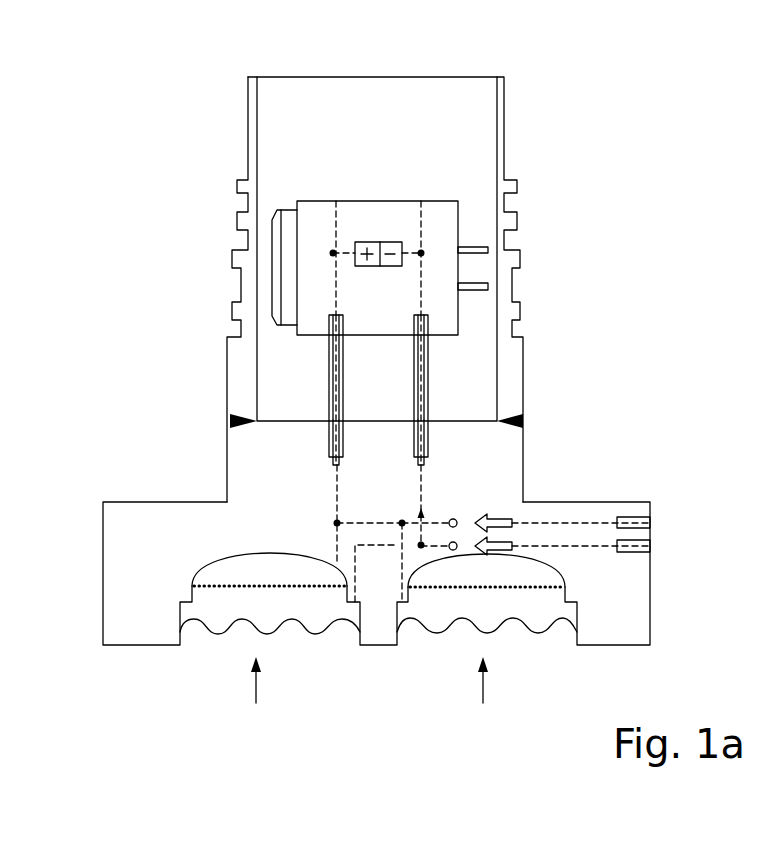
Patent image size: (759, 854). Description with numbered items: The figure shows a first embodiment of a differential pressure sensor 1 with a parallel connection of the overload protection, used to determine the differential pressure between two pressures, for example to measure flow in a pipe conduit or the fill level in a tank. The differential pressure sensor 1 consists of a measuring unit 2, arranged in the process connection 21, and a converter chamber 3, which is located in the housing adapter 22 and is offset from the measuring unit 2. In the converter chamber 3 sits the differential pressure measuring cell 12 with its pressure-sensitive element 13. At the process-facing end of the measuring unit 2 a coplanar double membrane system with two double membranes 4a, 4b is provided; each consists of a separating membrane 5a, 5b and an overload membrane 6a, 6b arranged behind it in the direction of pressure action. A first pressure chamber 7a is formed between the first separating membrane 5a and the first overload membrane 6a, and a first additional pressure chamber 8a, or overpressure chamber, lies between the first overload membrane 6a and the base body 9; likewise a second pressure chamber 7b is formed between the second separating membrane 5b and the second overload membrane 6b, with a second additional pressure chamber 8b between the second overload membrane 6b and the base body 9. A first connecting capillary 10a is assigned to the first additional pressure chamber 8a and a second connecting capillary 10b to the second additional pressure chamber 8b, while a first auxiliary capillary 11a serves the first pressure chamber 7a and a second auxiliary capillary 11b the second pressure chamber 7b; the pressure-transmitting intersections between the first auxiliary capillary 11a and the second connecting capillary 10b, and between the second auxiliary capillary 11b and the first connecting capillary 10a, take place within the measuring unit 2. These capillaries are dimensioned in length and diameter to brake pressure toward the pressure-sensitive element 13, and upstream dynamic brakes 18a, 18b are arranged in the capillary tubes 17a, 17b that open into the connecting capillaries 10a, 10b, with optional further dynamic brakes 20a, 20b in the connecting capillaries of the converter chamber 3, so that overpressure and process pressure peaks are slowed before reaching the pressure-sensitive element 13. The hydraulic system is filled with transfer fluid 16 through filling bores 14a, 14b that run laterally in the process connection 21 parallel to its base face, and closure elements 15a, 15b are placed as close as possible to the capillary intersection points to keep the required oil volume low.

The differential pressure sensor 1 is at (573, 430).
The measuring unit 2 is at (411, 539).
The converter chamber 3 is at (336, 223).
The first double membrane 4a is at (204, 658).
The second double membrane 4b is at (556, 658).
The first separating membrane 5a is at (327, 634).
The second separating membrane 5b is at (434, 633).
The first overload membrane 6a is at (313, 586).
The second overload membrane 6b is at (535, 587).
The first pressure chamber 7a is at (270, 601).
The second pressure chamber 7b is at (509, 639).
The first additional pressure chamber 8a is at (267, 568).
The second additional pressure chamber 8b is at (532, 573).
The base body 9 is at (411, 573).
The first connecting capillary 10a is at (335, 484).
The second connecting capillary 10b is at (421, 484).
The first auxiliary capillary 11a is at (370, 544).
The second auxiliary capillary 11b is at (388, 618).
The differential pressure measuring cell 12 is at (387, 188).
The pressure-sensitive element 13 is at (382, 226).
The first filling bore 14a is at (589, 522).
The second filling bore 14b is at (569, 544).
The first closure element 15a is at (457, 517).
The second closure element 15b is at (450, 546).
The transfer fluid 16 is at (374, 390).
The first capillary tube 17a is at (329, 383).
The second capillary tube 17b is at (428, 383).
The first dynamic brake 18a is at (329, 438).
The second dynamic brake 18b is at (428, 438).
The first dynamic brake of the converter chamber 20a is at (340, 252).
The second dynamic brake of the converter chamber 20b is at (422, 252).
The process connection 21 is at (642, 628).
The housing adapter 22 is at (502, 143).